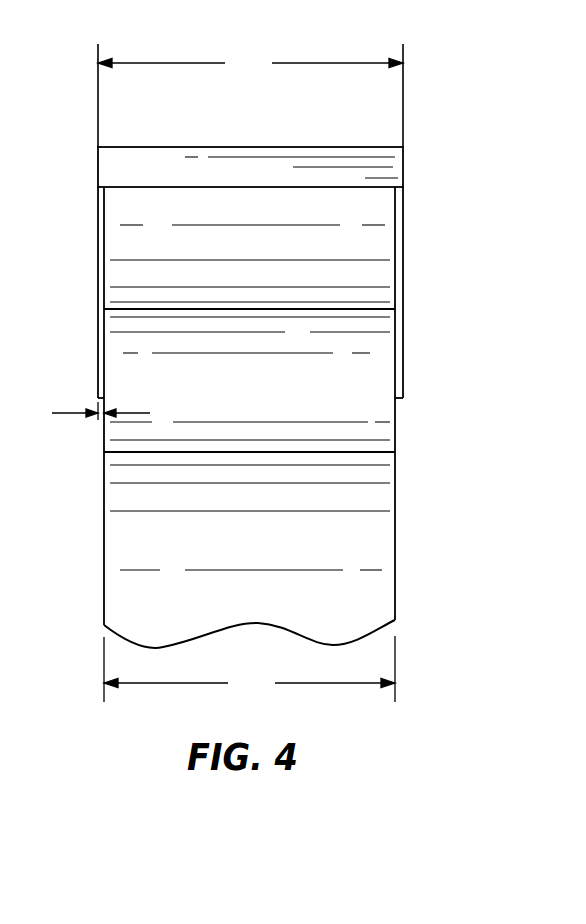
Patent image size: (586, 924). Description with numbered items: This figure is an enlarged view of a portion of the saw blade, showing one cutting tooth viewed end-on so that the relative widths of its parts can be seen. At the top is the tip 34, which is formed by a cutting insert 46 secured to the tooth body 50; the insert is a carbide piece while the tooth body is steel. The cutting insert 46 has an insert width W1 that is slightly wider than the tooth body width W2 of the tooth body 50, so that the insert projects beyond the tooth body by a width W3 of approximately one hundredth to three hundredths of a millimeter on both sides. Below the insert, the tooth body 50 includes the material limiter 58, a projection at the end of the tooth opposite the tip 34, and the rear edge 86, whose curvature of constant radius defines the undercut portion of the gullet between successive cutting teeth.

The tip 34 is at (282, 147).
The cutting insert 46 is at (390, 163).
The material limiter 58 is at (369, 267).
The rear edge 86 is at (369, 376).
The tooth body 50 is at (369, 523).
The insert width W1 is at (250, 59).
The tooth body width W2 is at (249, 670).
The width W3 is at (68, 413).